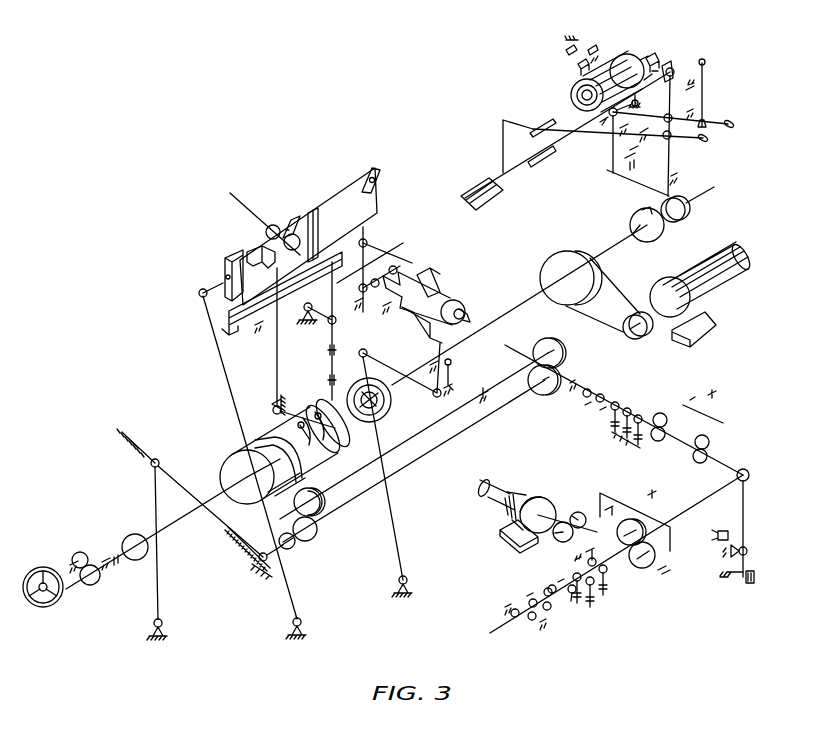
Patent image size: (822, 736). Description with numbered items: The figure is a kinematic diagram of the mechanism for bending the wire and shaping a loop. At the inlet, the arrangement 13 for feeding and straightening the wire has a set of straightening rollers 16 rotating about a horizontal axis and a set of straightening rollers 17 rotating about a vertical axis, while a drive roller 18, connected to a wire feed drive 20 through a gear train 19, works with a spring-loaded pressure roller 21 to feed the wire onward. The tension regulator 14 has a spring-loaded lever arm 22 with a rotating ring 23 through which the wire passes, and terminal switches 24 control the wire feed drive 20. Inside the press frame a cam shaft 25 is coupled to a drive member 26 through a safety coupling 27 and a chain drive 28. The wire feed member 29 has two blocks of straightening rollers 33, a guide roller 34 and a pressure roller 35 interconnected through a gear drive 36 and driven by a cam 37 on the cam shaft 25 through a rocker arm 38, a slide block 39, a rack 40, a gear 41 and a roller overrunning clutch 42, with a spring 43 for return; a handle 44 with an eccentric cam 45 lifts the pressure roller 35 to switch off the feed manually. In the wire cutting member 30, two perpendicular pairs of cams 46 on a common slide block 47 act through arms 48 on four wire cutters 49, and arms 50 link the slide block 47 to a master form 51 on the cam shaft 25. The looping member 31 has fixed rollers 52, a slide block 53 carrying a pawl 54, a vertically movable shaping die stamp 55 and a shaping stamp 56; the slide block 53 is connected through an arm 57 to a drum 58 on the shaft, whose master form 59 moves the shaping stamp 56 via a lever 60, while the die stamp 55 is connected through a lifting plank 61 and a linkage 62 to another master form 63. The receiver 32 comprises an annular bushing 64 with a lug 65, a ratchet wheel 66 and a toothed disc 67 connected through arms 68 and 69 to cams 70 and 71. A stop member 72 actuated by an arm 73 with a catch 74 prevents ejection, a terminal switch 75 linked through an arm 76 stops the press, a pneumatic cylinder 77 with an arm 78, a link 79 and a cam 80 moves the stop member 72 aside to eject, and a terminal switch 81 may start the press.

The arrangement for feeding and straightening the wire 13 is at (644, 598).
The tension regulator 14 is at (752, 538).
The straightening rollers 16 is at (512, 606).
The straightening rollers 17 is at (568, 580).
The drive roller 18 is at (648, 568).
The gear train 19 is at (579, 512).
The wire feed drive 20 is at (533, 498).
The spring-loaded pressure roller 21 is at (641, 524).
The spring-loaded lever arm 22 is at (745, 504).
The rotating ring 23 is at (750, 474).
The terminal switches 24 is at (717, 536).
The cam shaft 25 is at (715, 196).
The drive member 26 is at (700, 306).
The safety coupling 27 is at (638, 312).
The chain drive 28 is at (574, 256).
The wire feed member 29 is at (586, 363).
The wire cutting member 30 is at (402, 333).
The looping member 31 is at (316, 186).
The receiver 32 is at (538, 109).
The blocks of straightening rollers 33 is at (640, 400).
The guide roller 34 is at (542, 395).
The pressure roller 35 is at (550, 339).
The gear drive 36 is at (322, 532).
The cam 37 is at (148, 540).
The rocker arm 38 is at (160, 578).
The slide block 39 is at (168, 474).
The rack 40 is at (236, 551).
The gear 41 is at (260, 550).
The roller overrunning clutch 42 is at (293, 549).
The spring 43 is at (140, 444).
The handle 44 is at (455, 370).
The eccentric cam 45 is at (487, 387).
The cams 46 is at (440, 278).
The common slide block 47 is at (462, 305).
The arms 48 is at (405, 262).
The wire cutters 49 is at (370, 242).
The arms 50 is at (392, 365).
The master form 51 is at (392, 402).
The fixed rollers 52 is at (265, 230).
The slide block 53 is at (328, 190).
The pawl 54 is at (295, 216).
The shaping die stamp 55 is at (319, 224).
The shaping stamp 56 is at (246, 256).
The arm 57 is at (222, 369).
The drum 58 is at (240, 458).
The master form 59 is at (342, 450).
The lever 60 is at (275, 385).
The lifting plank 61 is at (268, 325).
The linkage 62 is at (330, 346).
The master form 63 is at (366, 378).
The annular bushing 64 is at (617, 66).
The lug 65 is at (571, 90).
The ratchet wheel 66 is at (603, 115).
The toothed disc 67 is at (655, 56).
The arm 68 is at (622, 180).
The arm 69 is at (671, 165).
The cam 70 is at (660, 238).
The cam 71 is at (687, 220).
The stop member 72 is at (673, 68).
The arm 73 is at (719, 120).
The catch 74 is at (704, 90).
The terminal switch 75 is at (566, 48).
The arm 76 is at (576, 64).
The pneumatic cylinder 77 is at (472, 206).
The arm 78 is at (502, 146).
The link 79 is at (520, 170).
The cam 80 is at (703, 62).
The terminal switch 81 is at (592, 48).